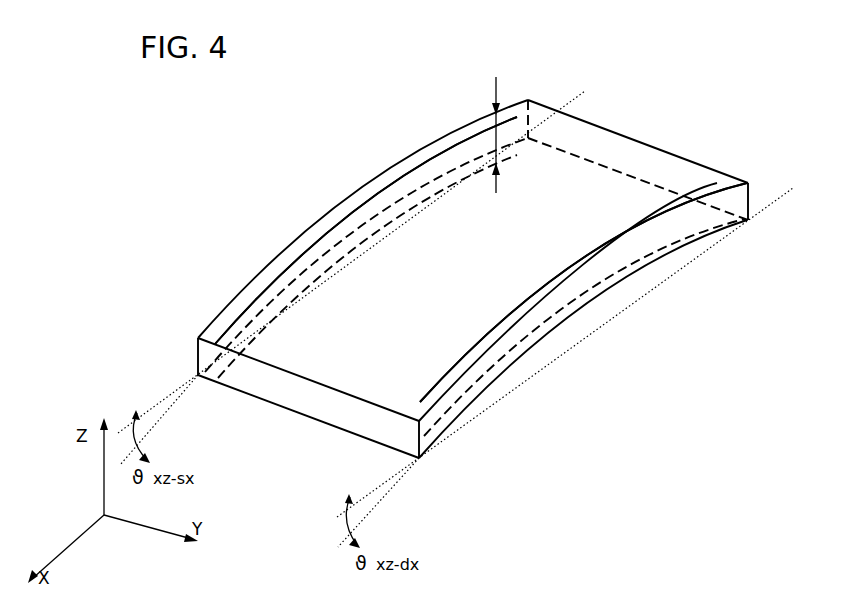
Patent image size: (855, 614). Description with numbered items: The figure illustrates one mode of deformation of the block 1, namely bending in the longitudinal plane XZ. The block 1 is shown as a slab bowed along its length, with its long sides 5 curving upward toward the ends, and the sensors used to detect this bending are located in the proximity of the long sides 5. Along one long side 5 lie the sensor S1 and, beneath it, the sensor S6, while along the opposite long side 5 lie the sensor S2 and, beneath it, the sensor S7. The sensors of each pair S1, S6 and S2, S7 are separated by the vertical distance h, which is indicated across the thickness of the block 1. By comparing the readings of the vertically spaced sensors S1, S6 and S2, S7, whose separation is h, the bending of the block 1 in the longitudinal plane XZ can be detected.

The block 1 is at (600, 178).
The long sides 5 is at (402, 160).
The vertical distance h is at (490, 140).
The sensor S1 is at (342, 213).
The sensor S2 is at (573, 263).
The sensor S6 is at (292, 312).
The sensor S7 is at (513, 348).